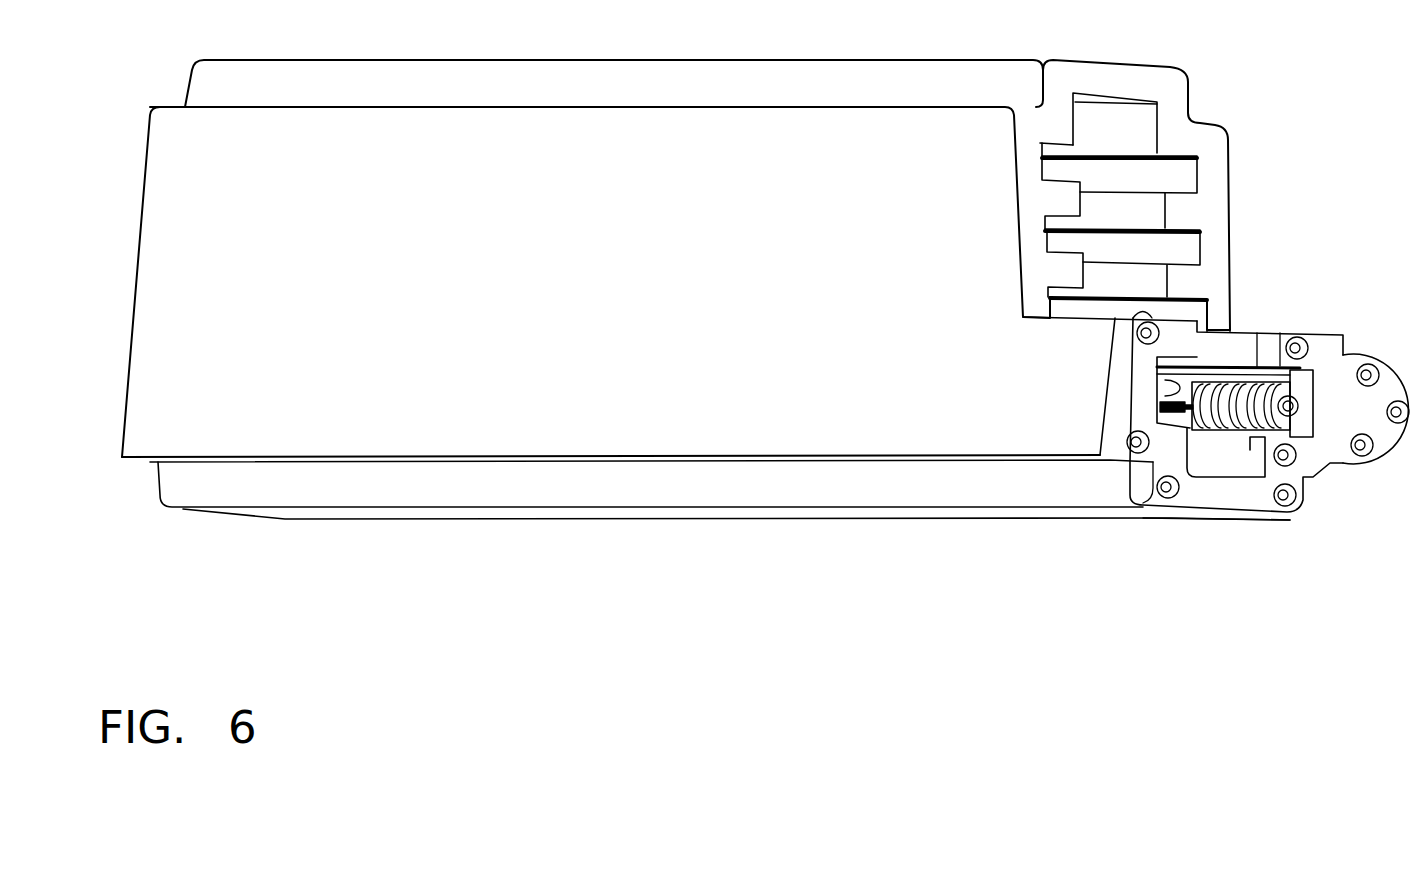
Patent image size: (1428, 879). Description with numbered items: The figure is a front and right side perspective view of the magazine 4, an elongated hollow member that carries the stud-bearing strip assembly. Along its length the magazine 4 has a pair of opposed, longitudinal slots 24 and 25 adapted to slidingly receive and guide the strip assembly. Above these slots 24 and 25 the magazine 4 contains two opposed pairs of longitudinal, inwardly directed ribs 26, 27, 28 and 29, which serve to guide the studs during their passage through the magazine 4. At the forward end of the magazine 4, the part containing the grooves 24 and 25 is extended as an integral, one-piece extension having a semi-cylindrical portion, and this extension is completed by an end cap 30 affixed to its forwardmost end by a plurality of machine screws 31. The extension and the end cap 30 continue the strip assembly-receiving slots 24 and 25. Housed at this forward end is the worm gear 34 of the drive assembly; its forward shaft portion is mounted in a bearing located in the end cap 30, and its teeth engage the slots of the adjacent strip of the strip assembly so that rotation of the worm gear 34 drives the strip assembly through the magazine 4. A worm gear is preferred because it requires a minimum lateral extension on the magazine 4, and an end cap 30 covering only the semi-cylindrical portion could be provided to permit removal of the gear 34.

The magazine 4 is at (556, 315).
The longitudinal slot 24 is at (1303, 415).
The longitudinal slot 25 is at (1178, 388).
The longitudinal inwardly directed rib 26 is at (1183, 210).
The longitudinal inwardly directed rib 27 is at (1187, 285).
The longitudinal inwardly directed rib 28 is at (1058, 200).
The longitudinal inwardly directed rib 29 is at (1062, 268).
The end cap 30 is at (1210, 490).
The machine screw 31 is at (1130, 440).
The worm gear 34 is at (1228, 395).